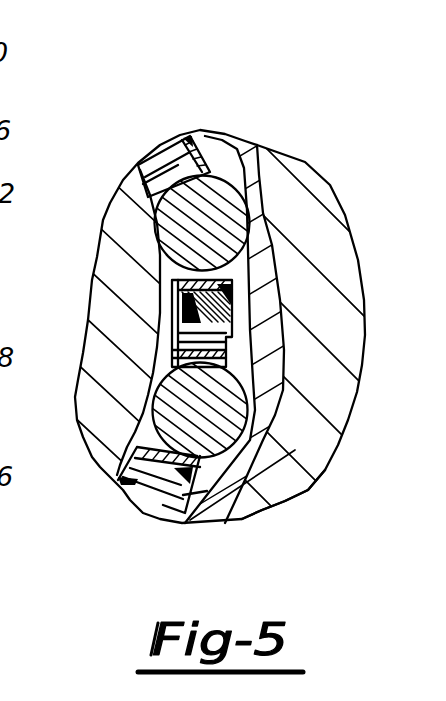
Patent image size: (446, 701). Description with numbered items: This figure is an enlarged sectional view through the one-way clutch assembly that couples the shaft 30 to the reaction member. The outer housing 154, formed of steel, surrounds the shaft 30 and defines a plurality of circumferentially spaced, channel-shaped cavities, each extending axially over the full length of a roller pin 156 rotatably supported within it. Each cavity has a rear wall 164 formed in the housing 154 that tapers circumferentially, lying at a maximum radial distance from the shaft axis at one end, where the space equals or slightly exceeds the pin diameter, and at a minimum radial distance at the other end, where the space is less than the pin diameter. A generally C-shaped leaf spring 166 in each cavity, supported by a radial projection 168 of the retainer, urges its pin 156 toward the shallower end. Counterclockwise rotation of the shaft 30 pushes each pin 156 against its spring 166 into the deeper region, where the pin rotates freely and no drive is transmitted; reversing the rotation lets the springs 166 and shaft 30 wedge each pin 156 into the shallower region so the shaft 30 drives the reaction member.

The shaft 30 is at (102, 407).
The outer housing 154 is at (263, 232).
The roller pin 156 is at (285, 502).
The rear wall 164 is at (258, 146).
The leaf spring 166 is at (207, 140).
The radial projection 168 is at (185, 303).